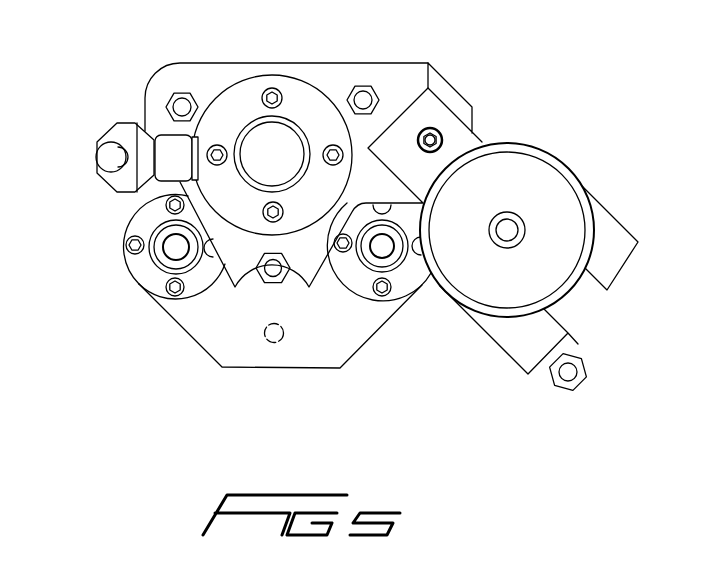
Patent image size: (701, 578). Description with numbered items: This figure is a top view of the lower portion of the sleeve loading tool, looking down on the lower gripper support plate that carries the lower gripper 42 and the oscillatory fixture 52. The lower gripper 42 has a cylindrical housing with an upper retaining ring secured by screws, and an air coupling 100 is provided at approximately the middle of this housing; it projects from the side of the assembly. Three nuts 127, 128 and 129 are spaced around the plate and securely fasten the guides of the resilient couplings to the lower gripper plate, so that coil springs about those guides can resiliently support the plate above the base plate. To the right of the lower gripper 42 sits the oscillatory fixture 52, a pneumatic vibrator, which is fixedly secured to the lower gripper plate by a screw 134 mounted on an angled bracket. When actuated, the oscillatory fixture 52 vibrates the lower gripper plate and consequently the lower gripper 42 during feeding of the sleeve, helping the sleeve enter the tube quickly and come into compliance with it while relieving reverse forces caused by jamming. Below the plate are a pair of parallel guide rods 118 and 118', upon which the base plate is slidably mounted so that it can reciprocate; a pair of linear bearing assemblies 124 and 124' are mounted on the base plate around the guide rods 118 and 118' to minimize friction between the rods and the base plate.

The air coupling 100 is at (146, 119).
The nut 127 is at (182, 91).
The lower gripper 42 is at (262, 116).
The nut 128 is at (363, 84).
The screw 134 is at (430, 127).
The oscillatory fixture 52 is at (558, 153).
The linear bearing assembly 124 is at (127, 245).
The guide rod 118 is at (137, 276).
The nut 129 is at (258, 278).
The guide rod 118' is at (387, 311).
The linear bearing assembly 124' is at (397, 276).